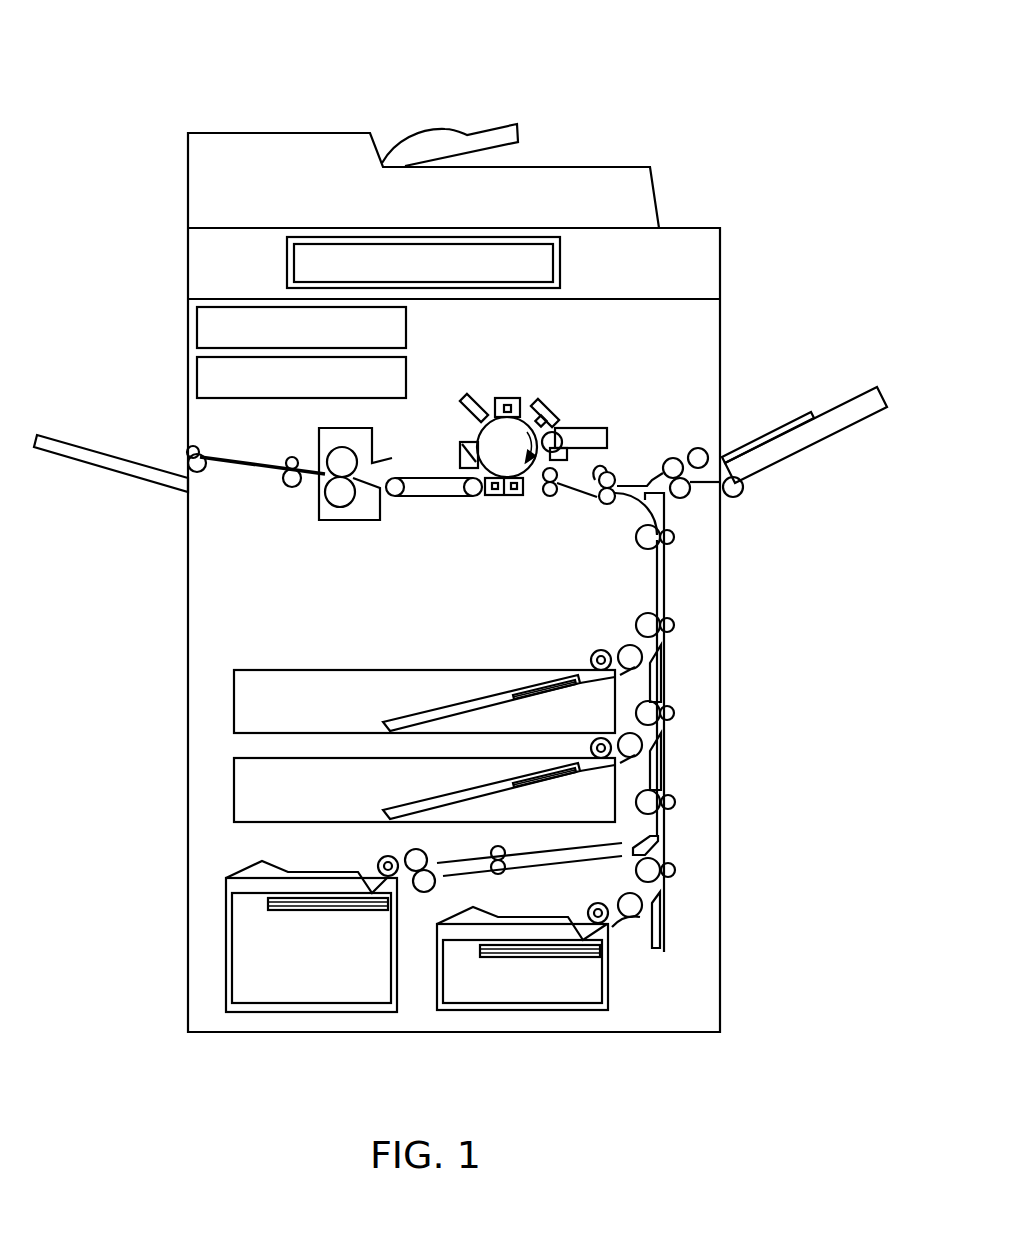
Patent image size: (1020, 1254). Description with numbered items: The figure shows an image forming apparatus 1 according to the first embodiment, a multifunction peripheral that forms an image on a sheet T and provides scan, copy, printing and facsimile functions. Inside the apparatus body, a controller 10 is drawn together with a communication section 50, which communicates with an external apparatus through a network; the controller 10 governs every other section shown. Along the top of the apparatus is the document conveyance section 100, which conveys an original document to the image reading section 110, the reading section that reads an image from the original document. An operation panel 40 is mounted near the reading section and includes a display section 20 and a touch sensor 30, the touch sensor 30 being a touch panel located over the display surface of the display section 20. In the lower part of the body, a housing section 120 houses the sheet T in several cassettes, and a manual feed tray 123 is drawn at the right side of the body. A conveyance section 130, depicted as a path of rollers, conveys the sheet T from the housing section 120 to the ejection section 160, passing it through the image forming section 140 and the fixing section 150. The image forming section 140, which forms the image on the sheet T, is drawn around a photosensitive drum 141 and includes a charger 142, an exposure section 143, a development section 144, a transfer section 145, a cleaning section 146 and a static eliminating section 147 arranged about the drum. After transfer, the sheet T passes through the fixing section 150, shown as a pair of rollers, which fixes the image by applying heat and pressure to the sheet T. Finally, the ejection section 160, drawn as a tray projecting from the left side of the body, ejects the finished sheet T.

The image forming apparatus 1 is at (490, 92).
The controller 10 is at (197, 328).
The display section 20 is at (560, 262).
The touch sensor 30 is at (287, 255).
The operation panel 40 is at (335, 236).
The communication section 50 is at (197, 368).
The document conveyance section 100 is at (596, 165).
The image reading section 110 is at (188, 283).
The housing section 120 is at (248, 843).
The manual feed tray 123 is at (848, 398).
The conveyance section 130 is at (700, 756).
The image forming section 140 is at (383, 447).
The photosensitive drum 141 is at (477, 432).
The charger 142 is at (510, 398).
The exposure section 143 is at (548, 400).
The development section 144 is at (608, 440).
The transfer section 145 is at (497, 496).
The cleaning section 146 is at (460, 450).
The static eliminating section 147 is at (470, 396).
The fixing section 150 is at (366, 530).
The ejection section 160 is at (173, 447).
The sheet T is at (783, 427).